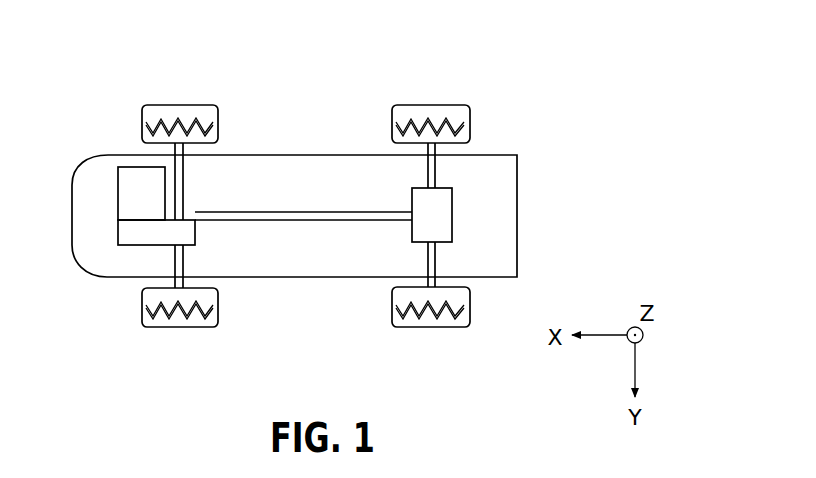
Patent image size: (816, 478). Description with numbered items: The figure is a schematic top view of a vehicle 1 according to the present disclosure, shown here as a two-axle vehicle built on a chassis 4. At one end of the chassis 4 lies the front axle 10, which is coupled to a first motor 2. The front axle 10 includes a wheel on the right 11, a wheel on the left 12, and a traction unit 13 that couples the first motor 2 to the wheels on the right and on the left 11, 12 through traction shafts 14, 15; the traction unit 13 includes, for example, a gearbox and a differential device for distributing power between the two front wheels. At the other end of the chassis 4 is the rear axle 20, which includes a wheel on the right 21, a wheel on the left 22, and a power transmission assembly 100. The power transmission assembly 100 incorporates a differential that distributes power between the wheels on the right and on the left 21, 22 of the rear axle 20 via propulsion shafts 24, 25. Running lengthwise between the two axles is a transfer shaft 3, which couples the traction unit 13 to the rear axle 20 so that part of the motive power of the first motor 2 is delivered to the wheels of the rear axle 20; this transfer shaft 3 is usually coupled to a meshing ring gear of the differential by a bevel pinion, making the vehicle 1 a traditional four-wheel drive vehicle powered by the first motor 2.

The vehicle 1 is at (130, 369).
The first motor 2 is at (132, 166).
The transfer shaft 3 is at (292, 211).
The chassis 4 is at (518, 200).
The front axle 10 is at (208, 232).
The wheel on the right 11 is at (160, 104).
The wheel on the left 12 is at (201, 328).
The traction unit 13 is at (137, 247).
The traction shaft 14 is at (184, 173).
The traction shaft 15 is at (184, 265).
The rear axle 20 is at (457, 232).
The wheel on the right 21 is at (445, 104).
The wheel on the left 22 is at (452, 328).
The propulsion shaft 24 is at (437, 167).
The propulsion shaft 25 is at (437, 255).
The power transmission assembly 100 is at (456, 199).